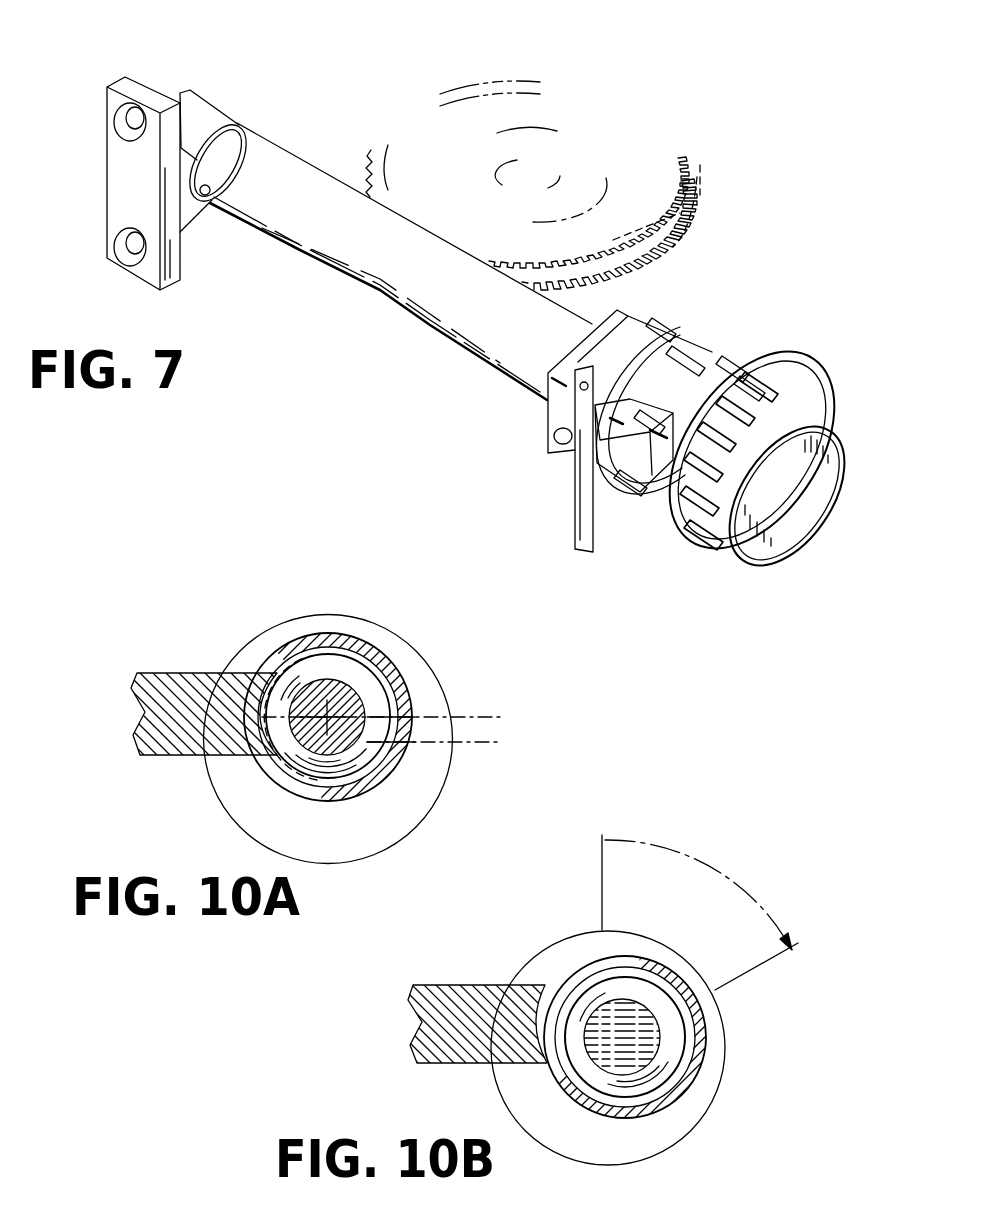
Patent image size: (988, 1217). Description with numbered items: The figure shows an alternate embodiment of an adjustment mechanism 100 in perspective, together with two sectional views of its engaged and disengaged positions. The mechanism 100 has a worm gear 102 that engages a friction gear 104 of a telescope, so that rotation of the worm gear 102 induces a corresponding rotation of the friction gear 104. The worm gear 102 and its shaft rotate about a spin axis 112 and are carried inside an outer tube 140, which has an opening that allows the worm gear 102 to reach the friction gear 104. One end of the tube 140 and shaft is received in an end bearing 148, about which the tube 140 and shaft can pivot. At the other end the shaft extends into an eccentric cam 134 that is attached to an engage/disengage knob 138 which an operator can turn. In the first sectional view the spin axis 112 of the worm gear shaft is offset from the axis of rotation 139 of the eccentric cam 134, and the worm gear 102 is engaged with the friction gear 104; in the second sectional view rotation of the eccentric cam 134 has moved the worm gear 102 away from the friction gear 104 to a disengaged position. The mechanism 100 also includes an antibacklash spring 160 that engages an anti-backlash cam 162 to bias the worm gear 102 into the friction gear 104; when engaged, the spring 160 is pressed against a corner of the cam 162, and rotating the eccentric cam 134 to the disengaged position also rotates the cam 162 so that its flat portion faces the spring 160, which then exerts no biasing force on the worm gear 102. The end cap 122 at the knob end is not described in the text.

In FIG. 7, the adjustment mechanism 100 is at (428, 403).
In FIG. 10A, the worm gear 102 is at (356, 677).
In FIG. 10B, the worm gear 102 is at (670, 1037).
In FIG. 7, the friction gear 104 is at (440, 133).
In FIG. 10A, the friction gear 104 is at (152, 670).
In FIG. 10B, the friction gear 104 is at (448, 993).
In FIG. 10A, the spin axis 112 is at (370, 694).
In FIG. 7, the end cap 122 is at (792, 527).
In FIG. 10A, the eccentric cam 134 is at (428, 780).
In FIG. 10B, the eccentric cam 134 is at (680, 1120).
In FIG. 7, the engage/disengage knob 138 is at (647, 523).
In FIG. 10A, the axis of rotation 139 is at (353, 753).
In FIG. 7, the outer tube 140 is at (372, 282).
In FIG. 10A, the outer tube 140 is at (310, 632).
In FIG. 10B, the outer tube 140 is at (657, 963).
In FIG. 7, the end bearing 148 is at (132, 88).
In FIG. 7, the antibacklash spring 160 is at (575, 497).
In FIG. 7, the anti-backlash cam 162 is at (555, 417).